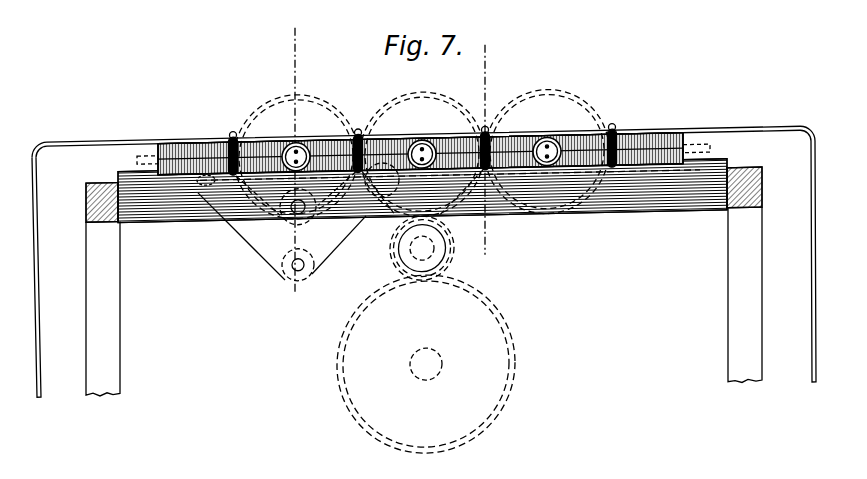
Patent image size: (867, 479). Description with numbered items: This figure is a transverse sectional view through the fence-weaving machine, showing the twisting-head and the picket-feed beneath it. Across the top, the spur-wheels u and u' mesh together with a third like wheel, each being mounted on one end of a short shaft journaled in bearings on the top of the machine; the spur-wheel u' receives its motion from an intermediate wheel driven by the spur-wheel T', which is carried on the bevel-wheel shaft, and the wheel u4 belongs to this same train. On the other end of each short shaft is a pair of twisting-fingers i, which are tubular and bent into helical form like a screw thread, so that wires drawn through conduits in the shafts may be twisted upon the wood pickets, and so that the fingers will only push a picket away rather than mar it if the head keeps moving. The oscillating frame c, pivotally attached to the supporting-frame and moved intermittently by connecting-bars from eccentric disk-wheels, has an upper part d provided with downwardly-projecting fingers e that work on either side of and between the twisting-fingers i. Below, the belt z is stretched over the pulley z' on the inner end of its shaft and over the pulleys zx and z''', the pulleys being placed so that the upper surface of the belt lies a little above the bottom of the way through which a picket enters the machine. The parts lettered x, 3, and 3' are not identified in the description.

The upper part of oscillating frame d is at (123, 137).
The oscillating frame c is at (39, 300).
The support standard x is at (424, 281).
The cord 3 is at (282, 235).
The toothed rack bar 3' is at (423, 144).
The downwardly-projecting fingers e is at (231, 134).
The twisting-fingers i is at (300, 140).
The spur-wheel u is at (547, 138).
The spur-wheel u' is at (422, 141).
The wheel u4 is at (437, 248).
The belt z is at (198, 190).
The pulley zx is at (398, 181).
The pulley z' is at (306, 215).
The pulley z''' is at (298, 277).
The spur-wheel T' is at (426, 364).